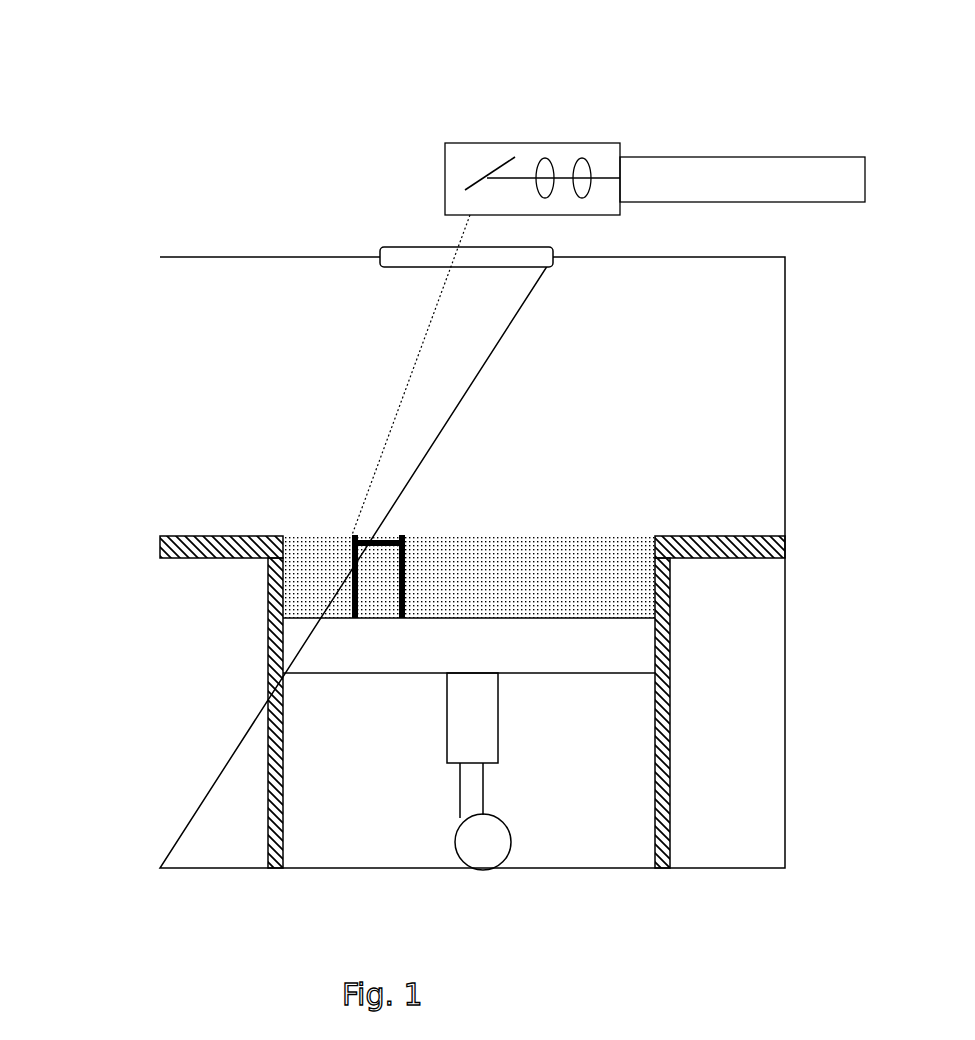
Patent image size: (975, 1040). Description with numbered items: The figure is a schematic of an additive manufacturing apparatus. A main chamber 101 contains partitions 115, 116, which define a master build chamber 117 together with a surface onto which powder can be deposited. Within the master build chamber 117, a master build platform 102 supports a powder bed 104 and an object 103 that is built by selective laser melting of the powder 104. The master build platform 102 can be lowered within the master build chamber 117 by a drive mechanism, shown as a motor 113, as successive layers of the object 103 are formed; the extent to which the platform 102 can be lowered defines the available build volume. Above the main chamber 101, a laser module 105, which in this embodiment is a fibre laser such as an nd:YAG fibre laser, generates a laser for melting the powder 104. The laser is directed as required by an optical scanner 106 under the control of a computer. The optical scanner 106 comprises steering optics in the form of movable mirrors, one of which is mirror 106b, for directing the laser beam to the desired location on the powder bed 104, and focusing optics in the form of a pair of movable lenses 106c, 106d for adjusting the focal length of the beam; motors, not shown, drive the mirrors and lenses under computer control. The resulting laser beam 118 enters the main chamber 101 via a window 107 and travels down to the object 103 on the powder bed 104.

The main chamber 101 is at (152, 425).
The master build platform 102 is at (403, 672).
The object 103 is at (350, 603).
The powder bed 104 is at (465, 545).
The laser module 105 is at (750, 155).
The optical scanner 106 is at (564, 112).
The movable mirror 106b is at (475, 168).
The movable lens 106c is at (543, 157).
The movable lens 106d is at (582, 157).
The window 107 is at (402, 250).
The motor 113 is at (500, 863).
The partition 115 is at (733, 550).
The partition 116 is at (265, 715).
The master build chamber 117 is at (285, 560).
The laser beam 118 is at (398, 422).